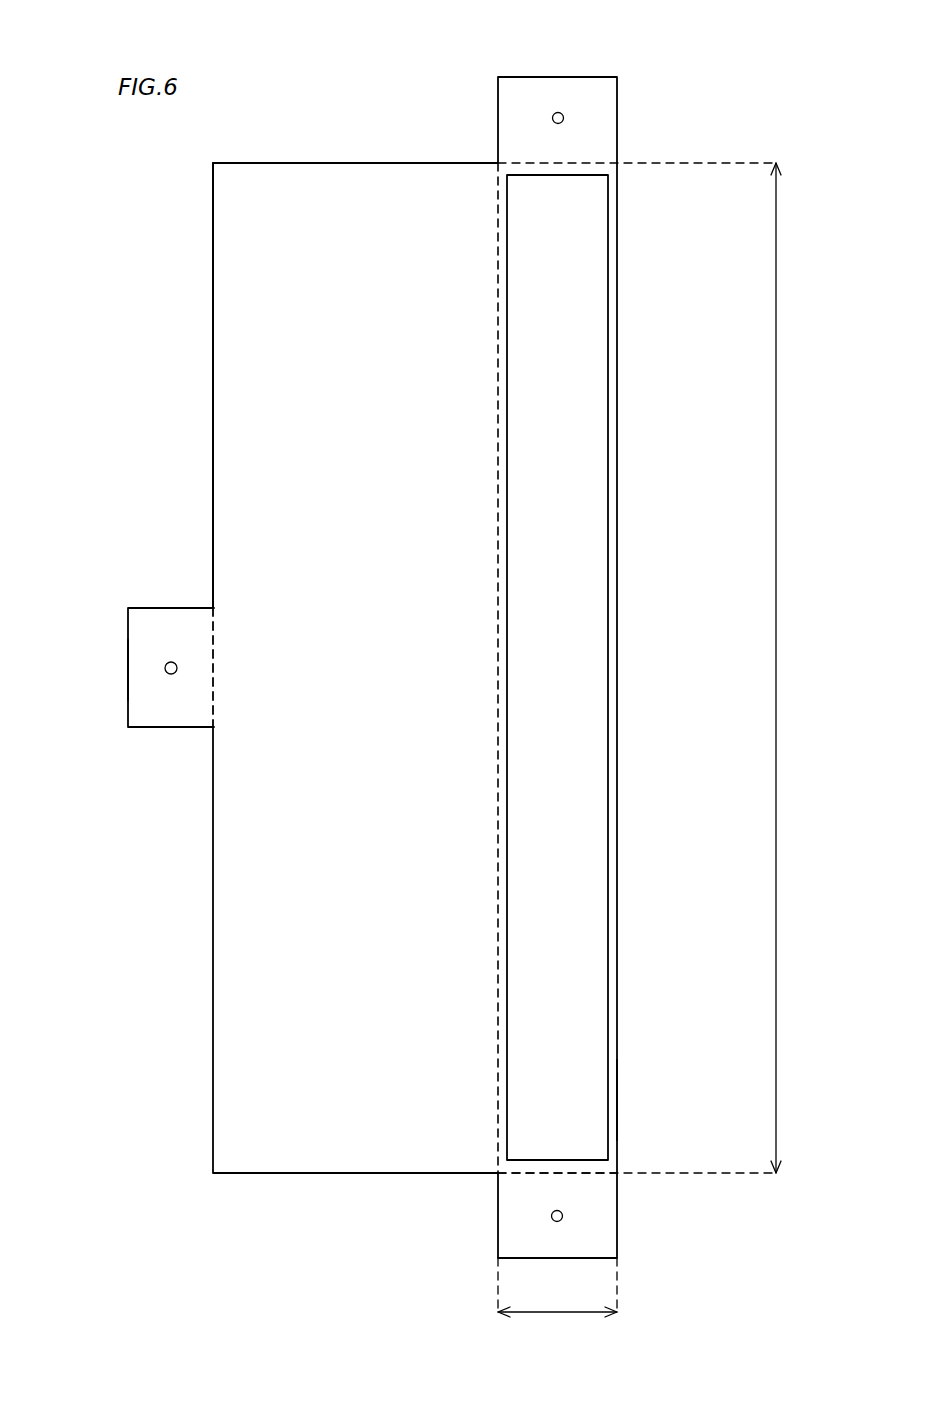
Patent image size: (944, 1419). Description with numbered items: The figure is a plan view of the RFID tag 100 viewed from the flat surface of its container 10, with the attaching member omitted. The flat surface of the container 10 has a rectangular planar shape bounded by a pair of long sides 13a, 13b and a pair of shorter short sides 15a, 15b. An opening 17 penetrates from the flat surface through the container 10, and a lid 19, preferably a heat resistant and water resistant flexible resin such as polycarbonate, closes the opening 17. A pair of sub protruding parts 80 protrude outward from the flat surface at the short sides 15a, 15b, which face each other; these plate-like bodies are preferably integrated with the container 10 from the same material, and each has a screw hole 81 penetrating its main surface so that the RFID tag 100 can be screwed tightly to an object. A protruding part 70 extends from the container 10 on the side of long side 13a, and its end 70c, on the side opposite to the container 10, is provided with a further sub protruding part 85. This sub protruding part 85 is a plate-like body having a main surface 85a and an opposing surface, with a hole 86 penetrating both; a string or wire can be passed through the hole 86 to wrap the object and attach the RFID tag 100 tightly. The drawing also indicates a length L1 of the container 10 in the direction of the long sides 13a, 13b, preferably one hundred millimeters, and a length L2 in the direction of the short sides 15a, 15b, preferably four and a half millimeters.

The RFID tag 100 is at (747, 72).
The container 10 is at (612, 457).
The long side 13a is at (487, 220).
The long side 13b is at (617, 1097).
The short side 15a is at (582, 160).
The short side 15b is at (598, 1176).
The opening 17 is at (562, 376).
The lid 19 is at (597, 283).
The protruding part 70 is at (255, 172).
The end of protruding part 70c is at (204, 417).
The sub protruding part 80 is at (593, 80).
The screw hole 81 is at (558, 111).
The sub protruding part 85 is at (149, 620).
The main surface 85a is at (148, 663).
The hole 86 is at (171, 676).
The length of container in long-side direction L1 is at (792, 668).
The length of container in short-side direction L2 is at (557, 1300).